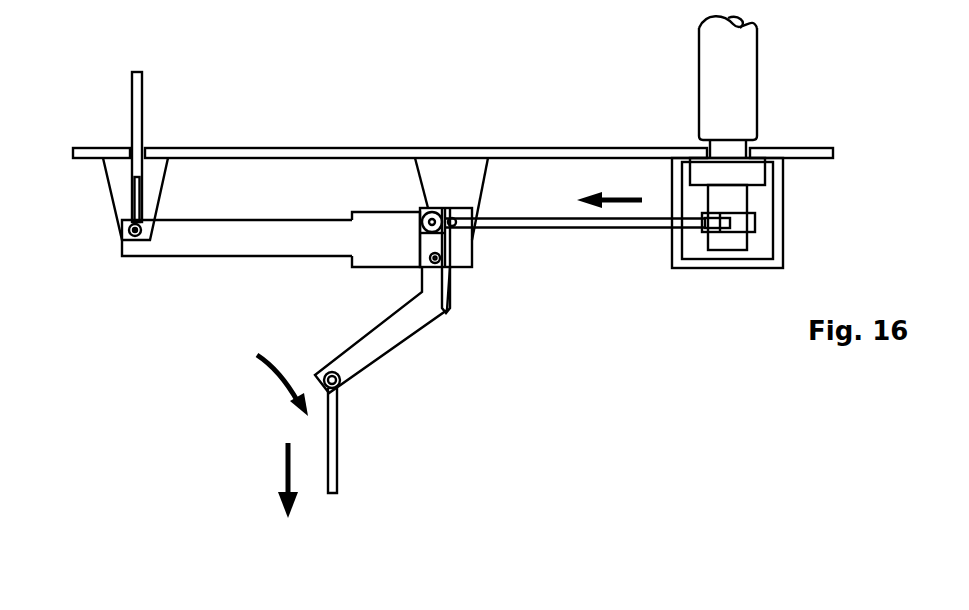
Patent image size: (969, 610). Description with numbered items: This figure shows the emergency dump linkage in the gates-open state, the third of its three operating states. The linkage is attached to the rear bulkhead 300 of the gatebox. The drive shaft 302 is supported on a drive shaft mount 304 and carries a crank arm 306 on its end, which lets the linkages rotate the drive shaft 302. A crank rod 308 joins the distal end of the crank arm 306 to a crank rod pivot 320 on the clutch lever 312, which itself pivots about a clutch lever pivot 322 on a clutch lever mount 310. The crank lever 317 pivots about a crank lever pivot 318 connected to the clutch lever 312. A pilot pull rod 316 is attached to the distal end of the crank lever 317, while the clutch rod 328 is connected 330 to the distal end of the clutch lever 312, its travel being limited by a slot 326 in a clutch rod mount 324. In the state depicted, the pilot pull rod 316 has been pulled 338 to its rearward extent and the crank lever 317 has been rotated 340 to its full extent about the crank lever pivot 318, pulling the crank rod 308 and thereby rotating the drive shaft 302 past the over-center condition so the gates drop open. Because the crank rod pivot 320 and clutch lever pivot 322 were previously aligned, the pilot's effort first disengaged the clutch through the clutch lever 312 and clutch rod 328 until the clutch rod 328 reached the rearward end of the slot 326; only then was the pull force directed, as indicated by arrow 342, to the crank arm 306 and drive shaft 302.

The rear bulkhead 300 is at (803, 160).
The drive shaft 302 is at (757, 80).
The drive shaft mount 304 is at (783, 235).
The crank arm 306 is at (720, 210).
The crank rod 308 is at (568, 228).
The clutch lever mount 310 is at (483, 182).
The clutch lever 312 is at (255, 218).
The pilot pull rod 316 is at (340, 425).
The crank lever 317 is at (392, 353).
The crank lever pivot 318 is at (443, 310).
The crank rod pivot 320 is at (428, 216).
The clutch lever pivot 322 is at (453, 227).
The clutch rod mount 324 is at (103, 163).
The slot 326 is at (141, 187).
The clutch rod 328 is at (131, 73).
The clutch rod connection 330 is at (122, 237).
The rearward movement 338 is at (283, 460).
The rotation of the crank lever 340 is at (272, 392).
The leftward direction arrow 342 is at (607, 195).